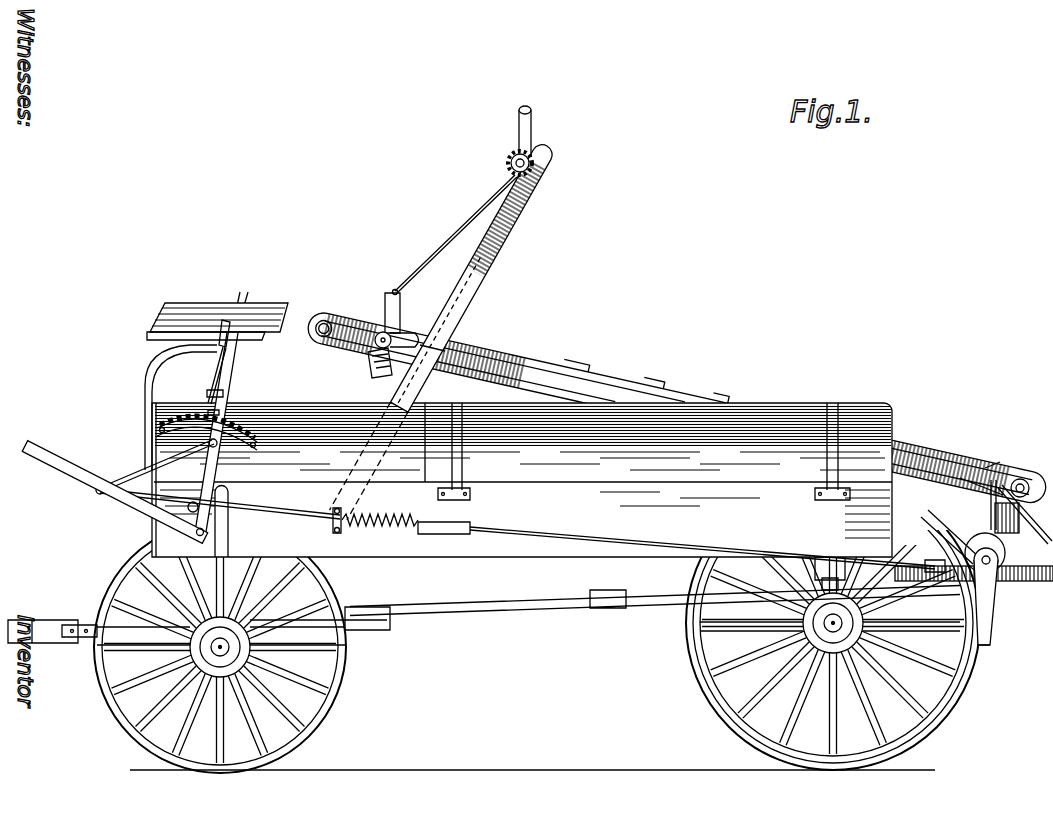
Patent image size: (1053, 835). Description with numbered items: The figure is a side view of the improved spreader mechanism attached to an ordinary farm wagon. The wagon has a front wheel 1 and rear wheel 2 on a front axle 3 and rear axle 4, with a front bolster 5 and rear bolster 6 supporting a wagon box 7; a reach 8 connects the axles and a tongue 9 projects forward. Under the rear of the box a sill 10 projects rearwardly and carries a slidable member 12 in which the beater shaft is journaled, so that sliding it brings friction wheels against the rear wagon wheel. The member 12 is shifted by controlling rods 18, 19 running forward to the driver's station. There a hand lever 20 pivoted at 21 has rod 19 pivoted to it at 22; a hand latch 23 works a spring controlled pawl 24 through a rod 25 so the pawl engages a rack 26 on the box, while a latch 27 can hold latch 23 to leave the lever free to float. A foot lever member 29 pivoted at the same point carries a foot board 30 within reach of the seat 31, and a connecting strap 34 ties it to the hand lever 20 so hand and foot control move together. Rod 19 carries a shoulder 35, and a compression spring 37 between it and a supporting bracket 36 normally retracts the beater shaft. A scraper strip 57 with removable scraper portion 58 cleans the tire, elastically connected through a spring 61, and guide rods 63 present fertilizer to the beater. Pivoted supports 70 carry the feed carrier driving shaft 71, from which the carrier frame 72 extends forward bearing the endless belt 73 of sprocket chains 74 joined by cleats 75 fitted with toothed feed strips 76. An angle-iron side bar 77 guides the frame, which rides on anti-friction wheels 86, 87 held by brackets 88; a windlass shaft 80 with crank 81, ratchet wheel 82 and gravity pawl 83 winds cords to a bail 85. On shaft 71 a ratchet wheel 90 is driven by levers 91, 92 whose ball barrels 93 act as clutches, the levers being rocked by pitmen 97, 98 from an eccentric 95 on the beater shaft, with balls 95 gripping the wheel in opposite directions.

The front wheel 1 is at (348, 657).
The rear wheel 2 is at (705, 647).
The front axle 3 is at (225, 650).
The rear axle 4 is at (838, 625).
The front bolster 5 is at (235, 564).
The rear bolster 6 is at (812, 565).
The wagon box 7 is at (512, 560).
The reach 8 is at (520, 606).
The tongue 9 is at (25, 625).
The sill 10 is at (1020, 590).
The slidably mounted member 12 is at (930, 580).
The controlling rod 18 is at (140, 490).
The beater controlling rod 19 is at (632, 548).
The hand lever 20 is at (238, 382).
The pivot 21 is at (190, 533).
The pivot 22 is at (145, 497).
The hand latch 23 is at (225, 332).
The spring controlled pawl 24 is at (210, 392).
The rod 25 is at (218, 376).
The rack 26 is at (240, 435).
The latch 27 is at (238, 295).
The foot lever member 29 is at (95, 492).
The foot board 30 is at (60, 448).
The seat 31 is at (272, 302).
The connecting strap 34 is at (160, 470).
The shoulder 35 is at (445, 536).
The supporting bracket 36 is at (350, 545).
The compression spring 37 is at (385, 530).
The scraper strip 57 is at (992, 596).
The scraper portion 58 is at (990, 645).
The spring 61 is at (825, 556).
The guide rod 63 is at (930, 525).
The pivoted support 70 is at (980, 545).
The feed carrier driving shaft 71 is at (1035, 470).
The carrier frame 72 is at (528, 355).
The endless belt 73 is at (612, 380).
The sprocket chain 74 is at (325, 315).
The cleat 75 is at (660, 380).
The toothed feed strip 76 is at (577, 362).
The side bar 77 is at (510, 262).
The shaft 80 is at (556, 168).
The crank 81 is at (516, 120).
The toothed ratchet wheel 82 is at (508, 162).
The gravity pawl 83 is at (537, 143).
The bail 85 is at (385, 300).
The anti-friction wheel 86 is at (455, 347).
The anti-friction wheel 87 is at (420, 325).
The bracket 88 is at (400, 290).
The ratchet wheel 90 is at (1023, 478).
The lever 91 is at (1009, 518).
The lever 92 is at (990, 465).
The barrel 93 is at (980, 483).
The eccentric 95 is at (935, 562).
The pitman 97 is at (1025, 517).
The pitman 98 is at (988, 505).